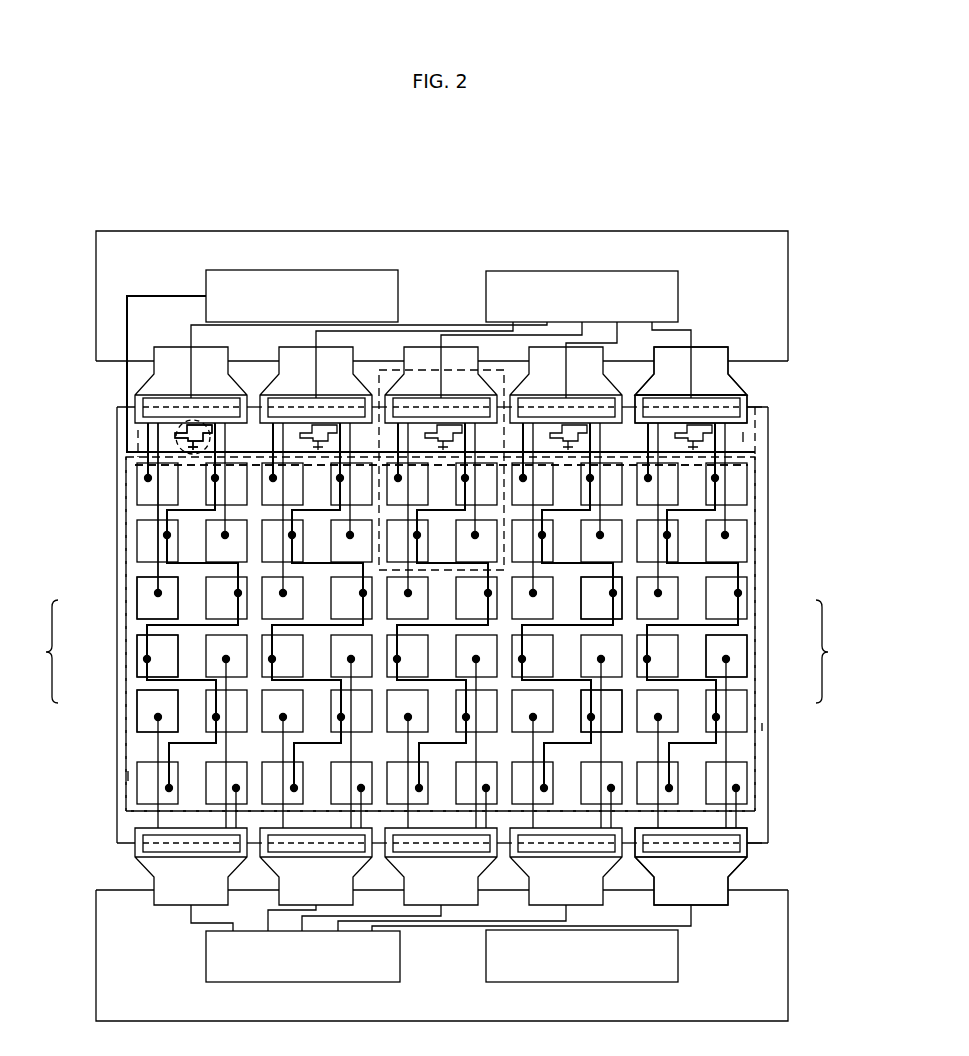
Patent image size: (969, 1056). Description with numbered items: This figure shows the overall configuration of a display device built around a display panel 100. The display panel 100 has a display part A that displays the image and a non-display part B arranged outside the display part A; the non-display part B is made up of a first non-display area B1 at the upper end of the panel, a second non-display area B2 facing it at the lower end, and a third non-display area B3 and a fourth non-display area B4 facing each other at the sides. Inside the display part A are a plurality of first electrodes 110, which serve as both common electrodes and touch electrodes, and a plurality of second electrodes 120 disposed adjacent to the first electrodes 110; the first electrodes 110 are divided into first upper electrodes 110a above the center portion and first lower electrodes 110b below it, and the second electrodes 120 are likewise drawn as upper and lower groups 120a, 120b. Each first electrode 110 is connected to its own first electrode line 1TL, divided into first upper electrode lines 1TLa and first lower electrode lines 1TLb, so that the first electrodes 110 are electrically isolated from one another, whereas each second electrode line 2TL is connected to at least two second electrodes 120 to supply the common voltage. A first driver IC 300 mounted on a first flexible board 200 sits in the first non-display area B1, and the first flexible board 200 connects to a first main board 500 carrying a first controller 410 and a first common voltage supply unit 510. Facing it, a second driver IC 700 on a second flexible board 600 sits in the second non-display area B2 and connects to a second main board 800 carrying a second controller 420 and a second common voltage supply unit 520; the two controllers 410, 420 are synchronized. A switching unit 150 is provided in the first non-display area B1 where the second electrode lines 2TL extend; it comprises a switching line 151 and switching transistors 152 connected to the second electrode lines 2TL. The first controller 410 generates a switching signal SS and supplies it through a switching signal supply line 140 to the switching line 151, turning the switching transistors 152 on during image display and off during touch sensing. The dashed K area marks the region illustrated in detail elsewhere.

The display panel 100 is at (769, 540).
The first electrodes 110 is at (95, 651).
The first upper electrodes 110a is at (152, 600).
The first lower electrodes 110b is at (152, 700).
The second electrodes 120 is at (787, 651).
The third pixel 120a is at (590, 600).
The fourth pixel 120b is at (590, 695).
The switching signal supply line 140 is at (126, 303).
The switching unit 150 is at (138, 443).
The switching line 151 is at (135, 456).
The switching transistors 152 is at (175, 437).
The first flexible board 200 is at (700, 377).
The first driver IC 300 is at (745, 403).
The first controller 410 is at (284, 310).
The second controller 420 is at (564, 970).
The first main board 500 is at (789, 298).
The first common voltage supply unit 510 is at (564, 310).
The second common voltage supply unit 520 is at (285, 970).
The second flexible board 600 is at (700, 878).
The second driver IC 700 is at (745, 846).
The second main board 800 is at (789, 958).
The switching signal SS is at (441, 364).
The K area K is at (410, 370).
The display part A is at (757, 778).
The non-display part B is at (756, 565).
The first non-display area B1 is at (745, 437).
The second non-display area B2 is at (705, 820).
The third non-display area B3 is at (128, 776).
The fourth non-display area B4 is at (762, 727).
The first electrode lines 1TL is at (155, 508).
The first upper electrode lines 1TLa is at (722, 485).
The first lower electrode lines 1TLb is at (722, 752).
The second electrode lines 2TL is at (165, 540).